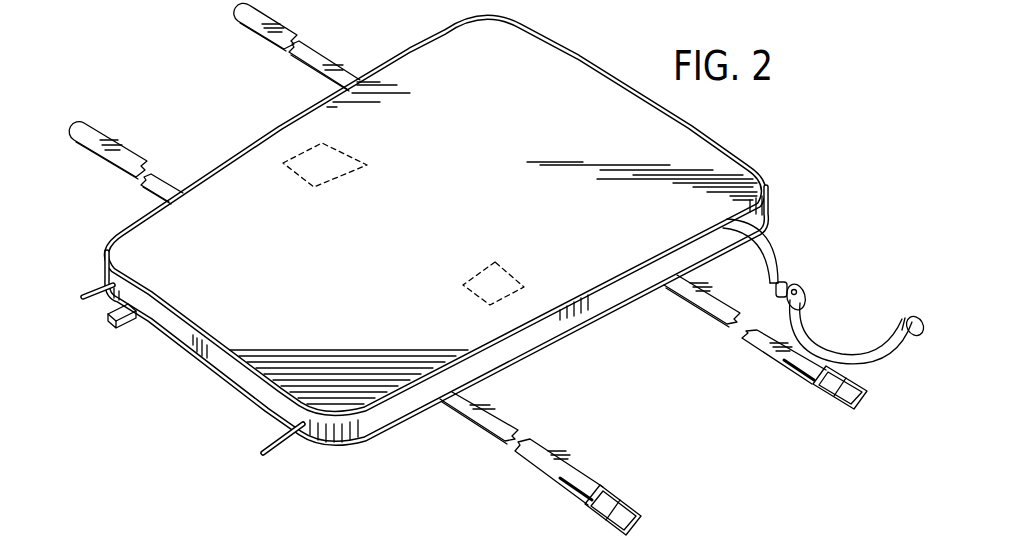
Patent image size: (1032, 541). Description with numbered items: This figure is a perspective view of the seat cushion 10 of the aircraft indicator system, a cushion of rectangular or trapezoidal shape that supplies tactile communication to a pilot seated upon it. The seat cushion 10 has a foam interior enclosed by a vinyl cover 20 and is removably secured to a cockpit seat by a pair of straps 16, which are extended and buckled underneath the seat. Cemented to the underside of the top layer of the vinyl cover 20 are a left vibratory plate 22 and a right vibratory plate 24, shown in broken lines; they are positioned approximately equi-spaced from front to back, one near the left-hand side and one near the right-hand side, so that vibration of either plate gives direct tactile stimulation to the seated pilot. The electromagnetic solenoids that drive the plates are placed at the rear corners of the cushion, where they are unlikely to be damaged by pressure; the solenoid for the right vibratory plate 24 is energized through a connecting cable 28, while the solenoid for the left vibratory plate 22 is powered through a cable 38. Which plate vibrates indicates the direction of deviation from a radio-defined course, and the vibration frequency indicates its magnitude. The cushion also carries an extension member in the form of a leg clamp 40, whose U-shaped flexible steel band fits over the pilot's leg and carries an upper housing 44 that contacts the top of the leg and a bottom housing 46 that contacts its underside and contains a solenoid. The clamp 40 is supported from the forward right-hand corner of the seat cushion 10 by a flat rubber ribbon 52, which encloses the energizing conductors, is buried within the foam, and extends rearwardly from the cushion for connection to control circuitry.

The seat cushion 10 is at (581, 55).
The straps 16 is at (505, 424).
The vinyl cover 20 is at (210, 307).
The left vibratory plate 22 is at (331, 170).
The right vibratory plate 24 is at (497, 263).
The connecting cable 28 is at (265, 452).
The cable 38 is at (87, 293).
The leg clamp 40 is at (843, 337).
The upper housing 44 is at (908, 318).
The bottom housing 46 is at (799, 281).
The flat rubber ribbon 52 is at (112, 326).